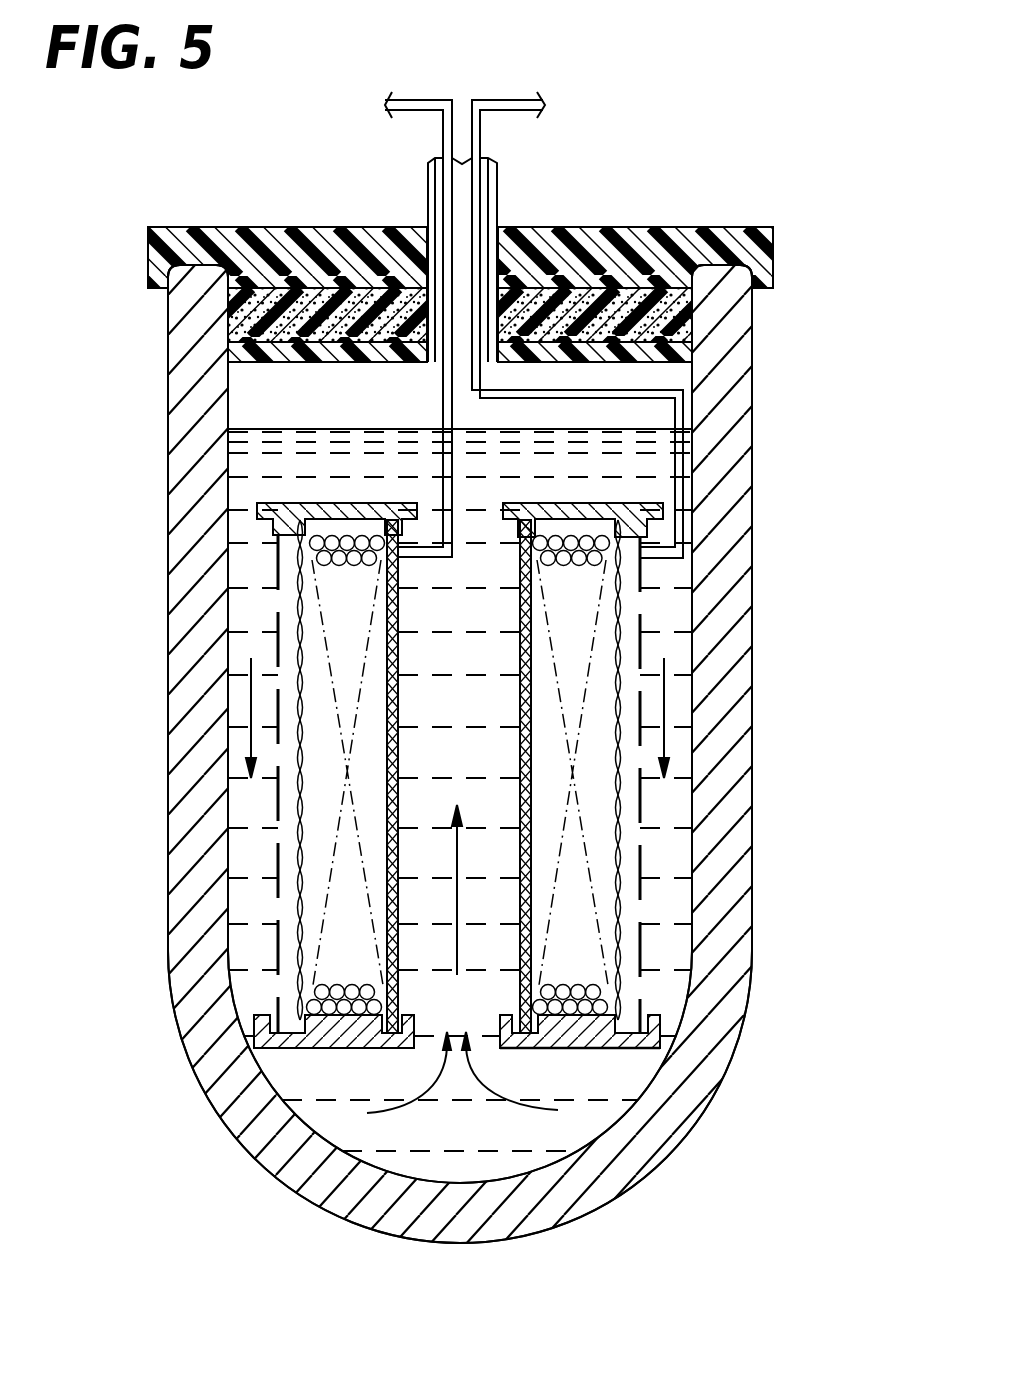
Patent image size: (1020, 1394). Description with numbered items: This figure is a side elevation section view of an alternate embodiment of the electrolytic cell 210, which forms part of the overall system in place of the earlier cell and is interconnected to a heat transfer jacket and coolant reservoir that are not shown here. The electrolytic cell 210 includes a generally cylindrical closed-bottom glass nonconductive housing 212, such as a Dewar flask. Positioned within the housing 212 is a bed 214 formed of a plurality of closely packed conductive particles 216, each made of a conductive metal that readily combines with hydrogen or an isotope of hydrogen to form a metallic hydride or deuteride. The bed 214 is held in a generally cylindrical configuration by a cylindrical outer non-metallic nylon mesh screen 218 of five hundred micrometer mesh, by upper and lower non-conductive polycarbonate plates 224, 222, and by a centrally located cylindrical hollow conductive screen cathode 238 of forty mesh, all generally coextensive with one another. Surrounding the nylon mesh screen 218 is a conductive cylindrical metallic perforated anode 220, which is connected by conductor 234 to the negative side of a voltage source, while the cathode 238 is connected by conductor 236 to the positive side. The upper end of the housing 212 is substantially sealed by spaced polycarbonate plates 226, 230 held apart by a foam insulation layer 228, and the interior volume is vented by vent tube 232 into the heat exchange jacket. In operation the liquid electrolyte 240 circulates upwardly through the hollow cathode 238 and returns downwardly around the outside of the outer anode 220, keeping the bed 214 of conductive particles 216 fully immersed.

The electrolytic cell 210 is at (752, 553).
The housing 212 is at (753, 588).
The bed 214 is at (591, 764).
The conductive particles 216 is at (576, 987).
The nylon mesh screen 218 is at (617, 812).
The perforated anode 220 is at (648, 1003).
The lower non-conductive plate 222 is at (598, 1050).
The upper non-conductive plate 224 is at (635, 503).
The polycarbonate plate 226 is at (643, 290).
The foam insulation layer 228 is at (647, 232).
The polycarbonate plate 230 is at (690, 385).
The vent tube 232 is at (498, 188).
The conductor 234 is at (474, 118).
The conductor 236 is at (443, 127).
The screen cathode 238 is at (385, 697).
The liquid electrolyte 240 is at (468, 1124).